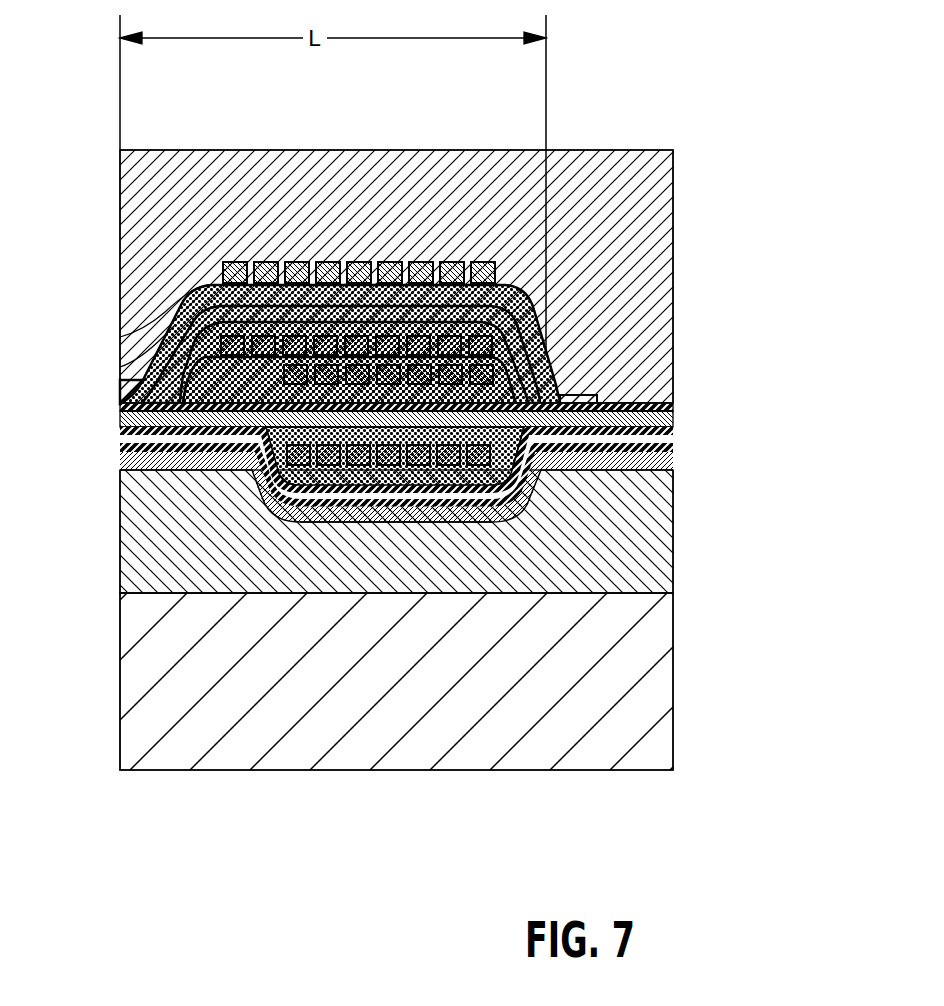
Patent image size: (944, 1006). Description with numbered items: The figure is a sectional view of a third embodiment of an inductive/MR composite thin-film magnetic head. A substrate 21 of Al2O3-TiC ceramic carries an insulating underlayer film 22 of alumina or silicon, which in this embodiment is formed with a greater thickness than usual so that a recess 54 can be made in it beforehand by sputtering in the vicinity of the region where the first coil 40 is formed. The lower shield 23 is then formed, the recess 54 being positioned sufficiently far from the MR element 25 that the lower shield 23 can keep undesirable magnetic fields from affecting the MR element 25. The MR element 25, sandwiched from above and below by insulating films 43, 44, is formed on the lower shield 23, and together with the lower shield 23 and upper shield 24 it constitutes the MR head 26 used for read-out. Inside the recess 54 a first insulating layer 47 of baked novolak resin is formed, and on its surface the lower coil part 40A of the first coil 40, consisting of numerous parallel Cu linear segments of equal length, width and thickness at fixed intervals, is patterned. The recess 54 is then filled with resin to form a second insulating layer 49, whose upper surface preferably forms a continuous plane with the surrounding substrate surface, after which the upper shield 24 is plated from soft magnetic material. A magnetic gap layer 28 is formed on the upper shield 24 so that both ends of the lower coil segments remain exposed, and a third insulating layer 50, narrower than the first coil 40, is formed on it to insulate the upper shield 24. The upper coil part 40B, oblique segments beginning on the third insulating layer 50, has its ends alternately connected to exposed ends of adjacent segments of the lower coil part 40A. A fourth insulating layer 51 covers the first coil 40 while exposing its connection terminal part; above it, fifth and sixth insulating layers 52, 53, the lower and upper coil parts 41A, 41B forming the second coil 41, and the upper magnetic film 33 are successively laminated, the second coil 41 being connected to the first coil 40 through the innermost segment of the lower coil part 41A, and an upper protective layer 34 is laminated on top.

The substrate 21 is at (120, 633).
The insulating underlayer film 22 is at (120, 563).
The lower shield 23 is at (120, 480).
The upper shield 24 is at (366, 451).
The MR element 25 is at (120, 443).
The MR head 26 is at (340, 467).
The magnetic gap layer 28 is at (120, 403).
The upper magnetic film 33 is at (177, 318).
The upper protective layer 34 is at (120, 190).
The first coil 40 is at (491, 263).
The lower coil part 40A is at (492, 367).
The upper coil part 40B is at (470, 263).
The second coil 41 is at (359, 179).
The lower coil part 41A is at (393, 336).
The upper coil part 41B is at (325, 262).
The insulating film 43 is at (673, 455).
The insulating film 44 is at (673, 418).
The first insulating layer 47 is at (371, 472).
The second insulating layer 49 is at (520, 472).
The third insulating layer 50 is at (120, 387).
The fourth insulating layer 51 is at (122, 367).
The fifth insulating layer 52 is at (120, 337).
The sixth insulating layer 53 is at (207, 287).
The recess 54 is at (468, 505).